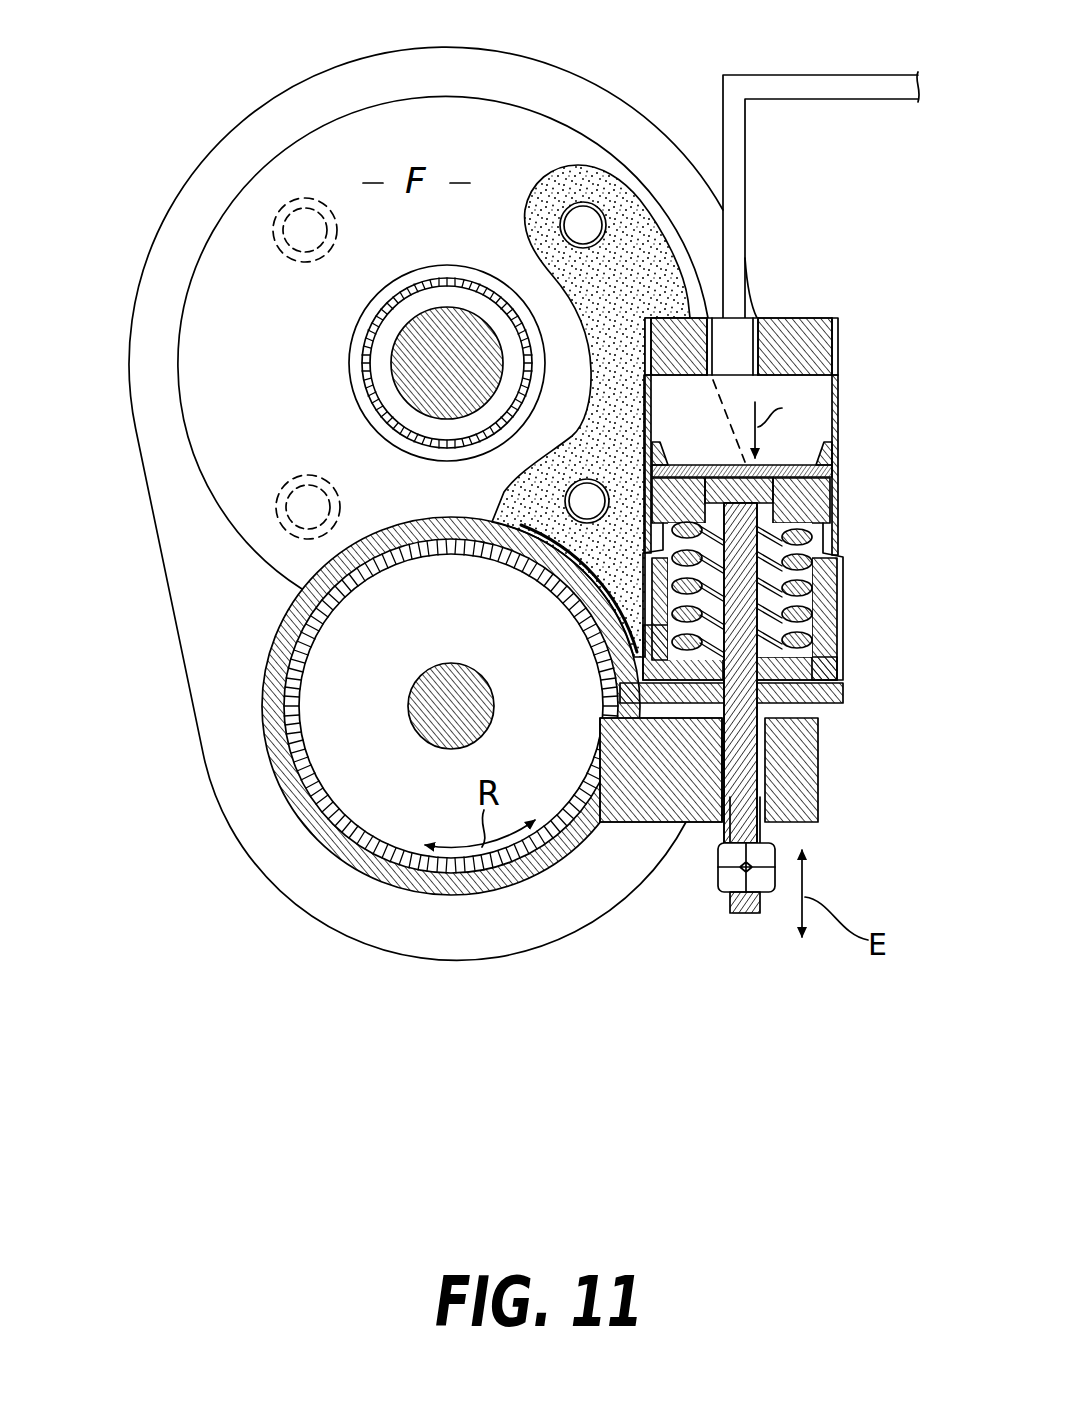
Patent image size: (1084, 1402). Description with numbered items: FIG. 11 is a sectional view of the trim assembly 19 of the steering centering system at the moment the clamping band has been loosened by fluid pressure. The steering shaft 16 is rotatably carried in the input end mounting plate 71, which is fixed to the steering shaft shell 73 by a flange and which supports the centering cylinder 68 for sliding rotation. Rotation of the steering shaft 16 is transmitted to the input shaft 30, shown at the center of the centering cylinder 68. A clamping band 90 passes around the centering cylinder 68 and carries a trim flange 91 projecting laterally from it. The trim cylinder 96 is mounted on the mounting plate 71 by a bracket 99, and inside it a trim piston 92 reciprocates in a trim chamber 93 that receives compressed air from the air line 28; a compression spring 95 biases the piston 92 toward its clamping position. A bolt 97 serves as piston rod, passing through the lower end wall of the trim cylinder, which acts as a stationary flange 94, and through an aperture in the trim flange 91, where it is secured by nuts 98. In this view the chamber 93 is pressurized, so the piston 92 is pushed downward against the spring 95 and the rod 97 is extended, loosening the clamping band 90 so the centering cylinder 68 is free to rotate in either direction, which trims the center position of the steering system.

The input end mounting plate 71 is at (417, 63).
The air line 28 is at (842, 82).
The bracket 99 is at (628, 223).
The steering shaft shell 73 is at (358, 330).
The steering shaft 16 is at (391, 383).
The trim chamber 93 is at (787, 392).
The trim piston 92 is at (708, 462).
The trim cylinder 96 is at (842, 550).
The compression spring 95 is at (842, 630).
The stationary flange 94 is at (842, 680).
The bolt 97 is at (842, 700).
The trim flange 91 is at (818, 778).
The nuts 98 is at (718, 886).
The input shaft 30 is at (440, 667).
The centering cylinder 68 is at (338, 803).
The clamping band 90 is at (357, 868).
The trim assembly 19 is at (727, 1008).